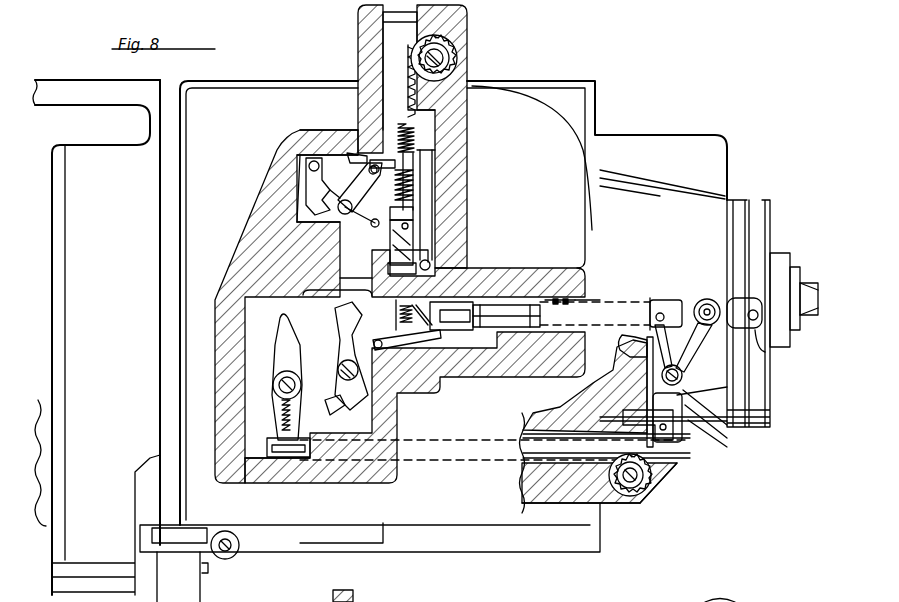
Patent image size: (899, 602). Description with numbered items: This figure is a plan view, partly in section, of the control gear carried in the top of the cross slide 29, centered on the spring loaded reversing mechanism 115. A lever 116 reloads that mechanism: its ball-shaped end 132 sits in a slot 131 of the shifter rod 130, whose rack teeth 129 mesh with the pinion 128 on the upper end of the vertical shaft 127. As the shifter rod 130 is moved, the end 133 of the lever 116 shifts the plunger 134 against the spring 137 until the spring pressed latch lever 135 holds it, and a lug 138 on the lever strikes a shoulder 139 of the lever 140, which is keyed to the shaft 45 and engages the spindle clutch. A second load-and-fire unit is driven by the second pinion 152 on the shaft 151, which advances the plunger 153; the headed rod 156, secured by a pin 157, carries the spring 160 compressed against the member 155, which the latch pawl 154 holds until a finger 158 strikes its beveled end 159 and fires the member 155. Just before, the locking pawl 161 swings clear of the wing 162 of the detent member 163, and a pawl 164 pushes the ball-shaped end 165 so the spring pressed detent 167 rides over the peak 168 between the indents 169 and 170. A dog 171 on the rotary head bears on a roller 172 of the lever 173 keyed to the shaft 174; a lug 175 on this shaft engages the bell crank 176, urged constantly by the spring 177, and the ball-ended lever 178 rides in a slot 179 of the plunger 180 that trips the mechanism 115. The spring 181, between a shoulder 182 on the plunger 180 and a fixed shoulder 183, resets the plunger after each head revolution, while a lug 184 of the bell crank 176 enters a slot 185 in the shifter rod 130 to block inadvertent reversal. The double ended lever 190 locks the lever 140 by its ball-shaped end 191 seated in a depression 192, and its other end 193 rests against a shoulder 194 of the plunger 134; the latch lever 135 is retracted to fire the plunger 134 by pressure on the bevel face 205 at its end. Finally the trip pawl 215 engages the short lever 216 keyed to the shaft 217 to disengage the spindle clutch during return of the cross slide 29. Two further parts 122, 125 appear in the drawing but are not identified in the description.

The cross slide 29 is at (730, 600).
The shaft 45 is at (285, 398).
The spring loaded mechanism 115 is at (482, 348).
The lever 116 is at (276, 344).
The support 122 is at (358, 596).
The plunger 125 is at (700, 440).
The vertical shaft 127 is at (620, 500).
The pinion 128 is at (648, 500).
The rack teeth 129 is at (682, 450).
The shifter rod 130 is at (418, 462).
The slot 131 is at (272, 450).
The ball-shaped end 132 is at (272, 440).
The end of lever 133 is at (282, 312).
The plunger 134 is at (302, 290).
The spring pressed latch lever 135 is at (432, 332).
The spring 137 is at (462, 332).
The lug 138 is at (280, 360).
The shoulder 139 is at (280, 375).
The lever 140 is at (295, 460).
The shaft 151 is at (446, 50).
The second pinion 152 is at (456, 60).
The plunger 153 is at (390, 48).
The latch pawl 154 is at (415, 235).
The member 155 is at (428, 247).
The headed rod 156 is at (420, 260).
The pin 157 is at (402, 128).
The finger 158 is at (426, 160).
The beveled end 159 is at (428, 212).
The spring 160 is at (412, 195).
The locking pawl 161 is at (370, 157).
The wing 162 is at (392, 162).
The detent member 163 is at (372, 254).
The pawl 164 is at (372, 228).
The ball-shaped end 165 is at (364, 187).
The spring pressed detent 167 is at (305, 178).
The peak 168 is at (308, 167).
The indent 169 is at (320, 222).
The indent 170 is at (345, 155).
The dog 171 is at (764, 352).
The roller 172 is at (712, 299).
The lever 173 is at (684, 357).
The shaft 174 is at (755, 395).
The lug 175 is at (739, 411).
The bell crank 176 is at (702, 450).
The spring 177 is at (606, 392).
The ball-ended lever 178 is at (622, 340).
The slot 179 is at (655, 300).
The plunger 180 is at (662, 300).
The spring 181 is at (592, 300).
The shoulder 182 is at (608, 300).
The fixed shoulder 183 is at (575, 300).
The lug 184 is at (530, 418).
The slot 185 is at (658, 480).
The double ended lever 190 is at (370, 370).
The ball-shaped end 191 is at (347, 412).
The depression 192 is at (329, 383).
The end of lever 193 is at (360, 312).
The shoulder 194 is at (337, 287).
The bevel face 205 is at (415, 338).
The trip pawl 215 is at (212, 568).
The short lever 216 is at (205, 527).
The shaft 217 is at (240, 548).